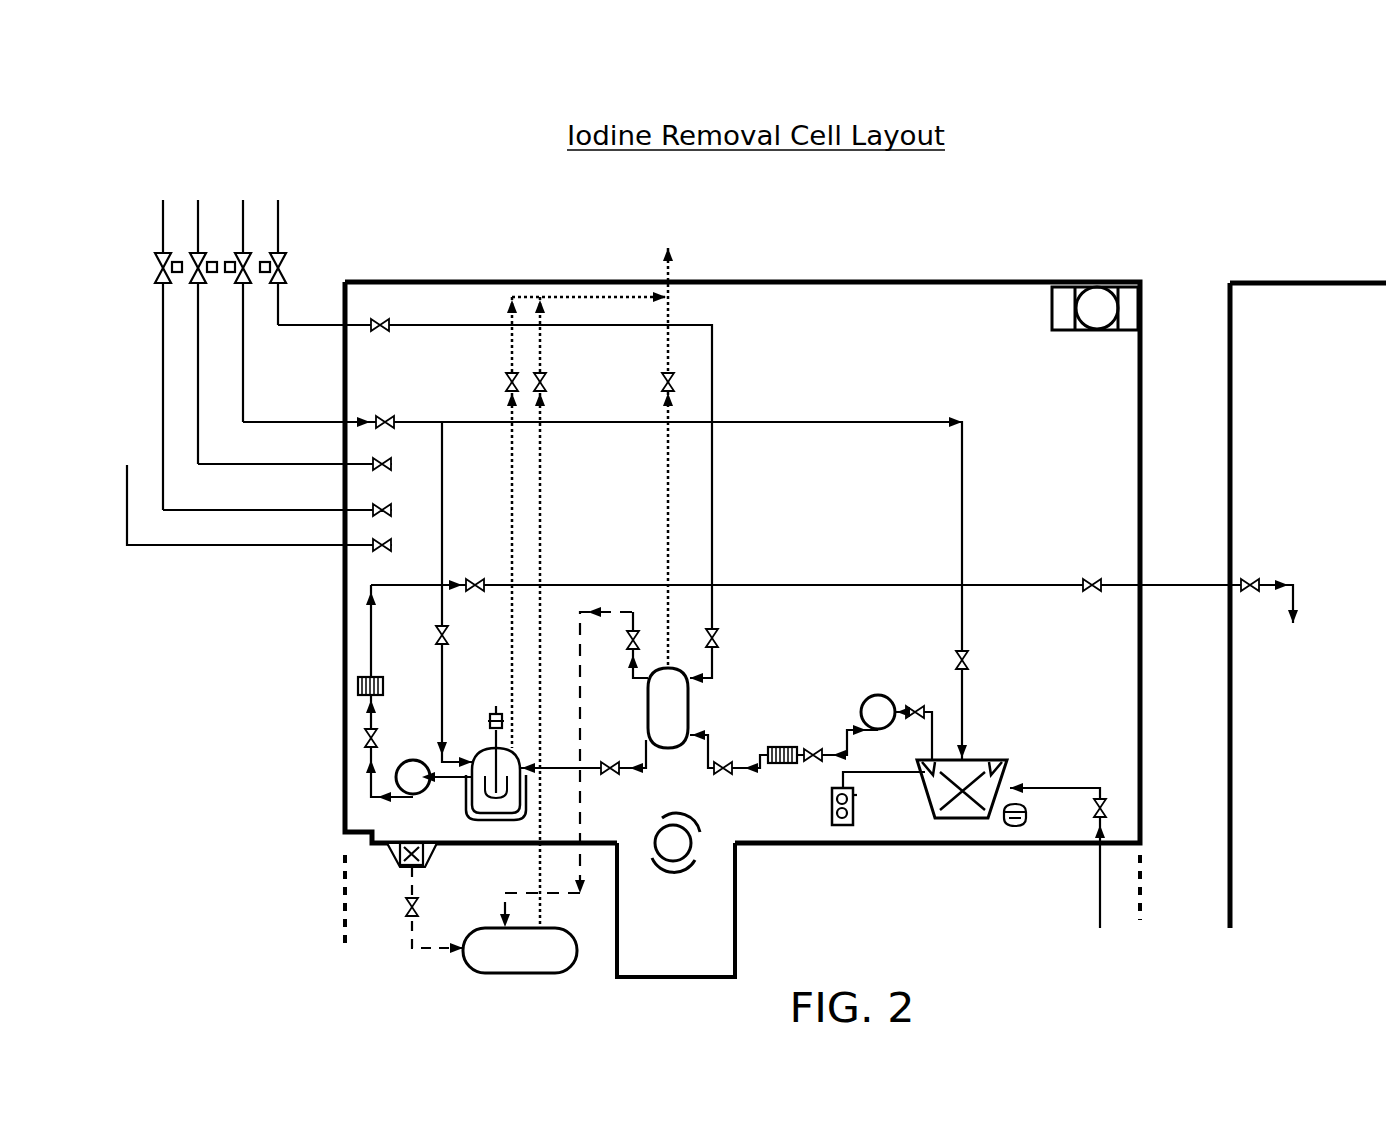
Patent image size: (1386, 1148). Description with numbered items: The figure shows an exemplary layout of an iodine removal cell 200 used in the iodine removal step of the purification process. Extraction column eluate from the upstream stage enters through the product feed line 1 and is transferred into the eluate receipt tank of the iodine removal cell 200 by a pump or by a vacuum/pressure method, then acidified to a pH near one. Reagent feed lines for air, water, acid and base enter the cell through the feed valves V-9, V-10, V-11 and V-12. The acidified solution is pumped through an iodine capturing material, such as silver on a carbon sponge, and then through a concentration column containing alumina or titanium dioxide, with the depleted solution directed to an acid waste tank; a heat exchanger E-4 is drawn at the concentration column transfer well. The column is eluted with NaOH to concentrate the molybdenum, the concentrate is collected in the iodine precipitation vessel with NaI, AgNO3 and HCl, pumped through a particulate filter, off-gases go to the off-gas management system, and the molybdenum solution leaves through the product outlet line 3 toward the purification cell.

The iodine removal cell 200 is at (478, 238).
The air reagent feed valve V-9 is at (173, 355).
The water reagent feed valve V-10 is at (210, 332).
The acid reagent feed valve V-11 is at (250, 311).
The base (NaOH) reagent feed valve V-12 is at (285, 262).
The concentration column heat exchanger E-4 is at (676, 853).
The product feed line from FIG. 1 is at (1082, 887).
The product outlet line to FIG. 3 purification cell 3 is at (1285, 621).